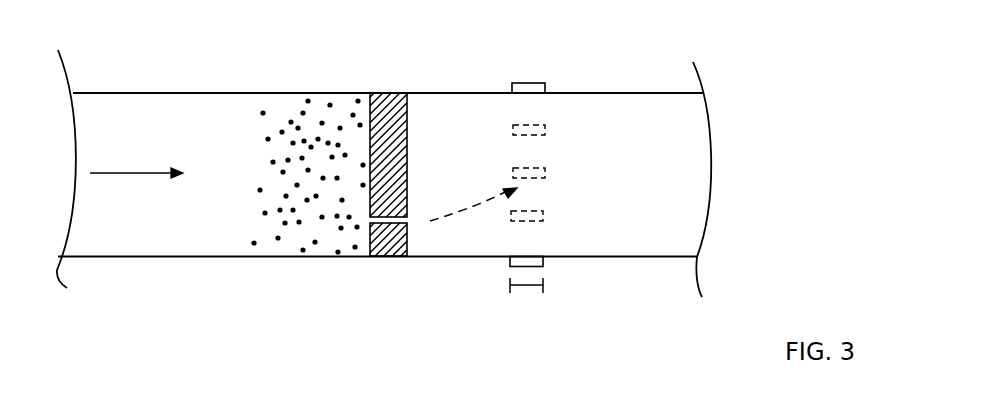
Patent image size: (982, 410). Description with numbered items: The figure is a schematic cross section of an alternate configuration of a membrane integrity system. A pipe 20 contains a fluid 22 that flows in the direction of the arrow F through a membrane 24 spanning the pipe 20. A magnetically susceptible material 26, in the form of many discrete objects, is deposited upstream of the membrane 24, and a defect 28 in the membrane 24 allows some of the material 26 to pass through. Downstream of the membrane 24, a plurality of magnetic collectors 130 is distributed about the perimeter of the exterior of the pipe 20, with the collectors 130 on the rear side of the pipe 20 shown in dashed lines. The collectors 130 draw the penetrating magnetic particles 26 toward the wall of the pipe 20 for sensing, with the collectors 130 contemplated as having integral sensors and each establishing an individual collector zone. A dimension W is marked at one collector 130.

The pipe 20 is at (153, 93).
The fluid 22 is at (176, 139).
The membrane 24 is at (393, 93).
The magnetically susceptible material 26 is at (296, 257).
The defect 28 is at (403, 219).
The magnetic collectors 130 is at (558, 83).
The flow direction arrow F is at (108, 178).
The sensor width W is at (527, 287).